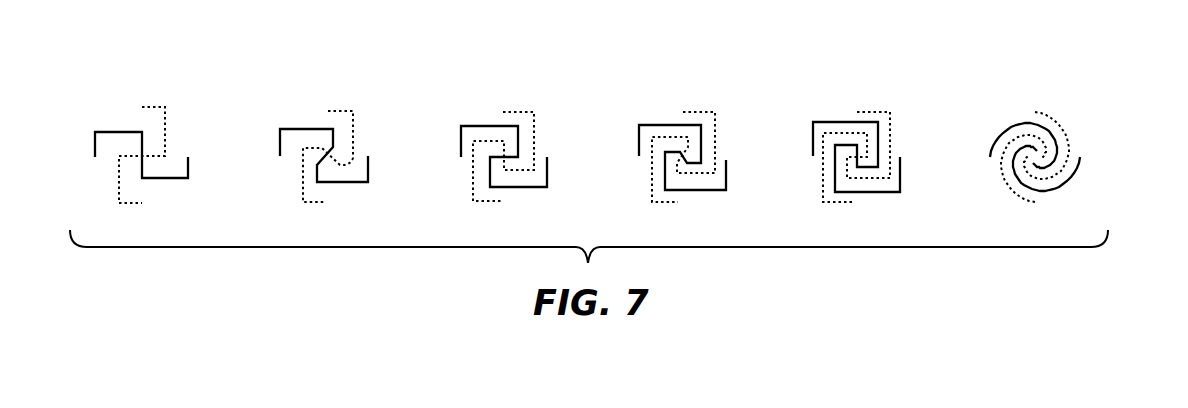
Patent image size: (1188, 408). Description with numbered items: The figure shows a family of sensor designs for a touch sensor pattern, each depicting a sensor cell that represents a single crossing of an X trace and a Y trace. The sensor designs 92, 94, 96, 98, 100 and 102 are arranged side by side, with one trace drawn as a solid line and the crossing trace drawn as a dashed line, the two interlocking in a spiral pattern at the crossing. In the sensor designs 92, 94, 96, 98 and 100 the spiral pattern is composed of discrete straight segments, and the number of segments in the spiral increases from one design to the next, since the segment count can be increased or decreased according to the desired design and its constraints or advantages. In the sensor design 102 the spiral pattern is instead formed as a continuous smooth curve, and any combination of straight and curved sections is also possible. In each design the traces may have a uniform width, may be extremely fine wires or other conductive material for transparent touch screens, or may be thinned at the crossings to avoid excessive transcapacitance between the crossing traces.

The sensor design 92 is at (180, 90).
The sensor design 94 is at (346, 92).
The sensor design 96 is at (518, 92).
The sensor design 98 is at (703, 92).
The sensor design 100 is at (881, 92).
The sensor design 102 is at (1063, 92).